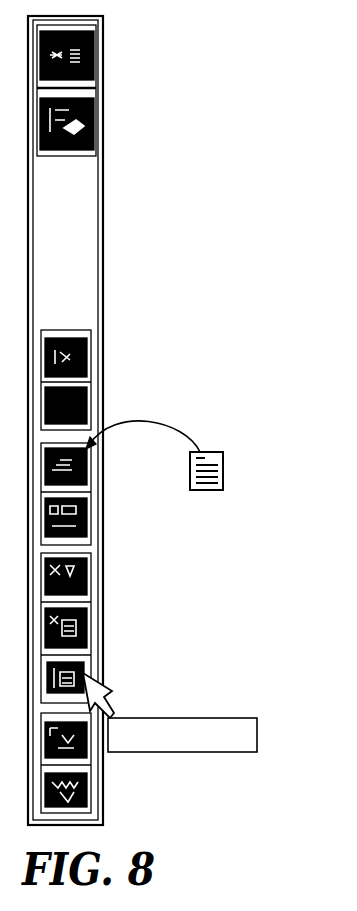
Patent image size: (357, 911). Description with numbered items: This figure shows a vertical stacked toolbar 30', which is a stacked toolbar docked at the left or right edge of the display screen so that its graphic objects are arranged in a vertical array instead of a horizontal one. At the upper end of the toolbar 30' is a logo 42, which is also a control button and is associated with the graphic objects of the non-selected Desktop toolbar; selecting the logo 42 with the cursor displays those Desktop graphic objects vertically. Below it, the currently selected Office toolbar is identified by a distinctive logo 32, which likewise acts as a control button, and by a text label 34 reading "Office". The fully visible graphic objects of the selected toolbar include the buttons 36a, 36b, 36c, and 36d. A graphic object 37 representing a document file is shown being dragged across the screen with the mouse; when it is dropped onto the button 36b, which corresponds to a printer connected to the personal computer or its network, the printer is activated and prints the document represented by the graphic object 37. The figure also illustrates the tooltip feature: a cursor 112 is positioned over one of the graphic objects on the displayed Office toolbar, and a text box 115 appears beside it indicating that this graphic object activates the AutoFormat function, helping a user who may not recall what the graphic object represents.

The vertical stacked toolbar 30' is at (111, 436).
The logo 42 is at (97, 55).
The logo 32 is at (97, 122).
The text label 34 is at (83, 246).
The button 36a is at (92, 407).
The button 36b is at (92, 463).
The graphic object 37 is at (188, 488).
The button 36c is at (92, 573).
The cursor 112 is at (105, 690).
The text box 115 is at (258, 735).
The button 36d is at (89, 784).